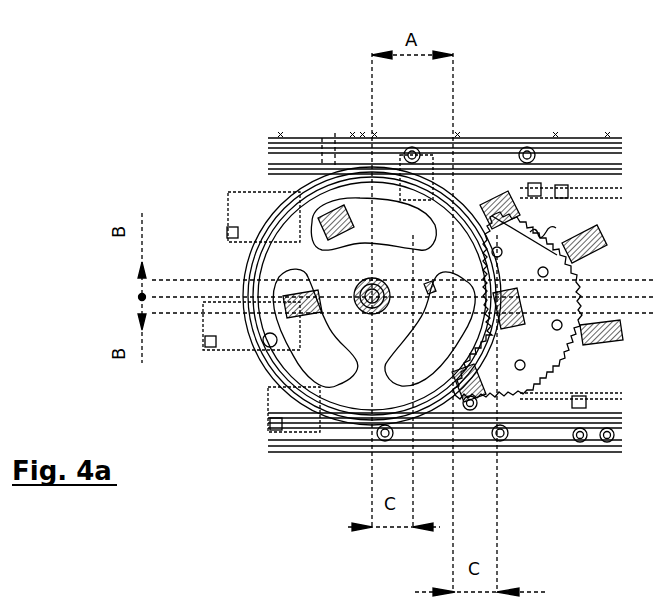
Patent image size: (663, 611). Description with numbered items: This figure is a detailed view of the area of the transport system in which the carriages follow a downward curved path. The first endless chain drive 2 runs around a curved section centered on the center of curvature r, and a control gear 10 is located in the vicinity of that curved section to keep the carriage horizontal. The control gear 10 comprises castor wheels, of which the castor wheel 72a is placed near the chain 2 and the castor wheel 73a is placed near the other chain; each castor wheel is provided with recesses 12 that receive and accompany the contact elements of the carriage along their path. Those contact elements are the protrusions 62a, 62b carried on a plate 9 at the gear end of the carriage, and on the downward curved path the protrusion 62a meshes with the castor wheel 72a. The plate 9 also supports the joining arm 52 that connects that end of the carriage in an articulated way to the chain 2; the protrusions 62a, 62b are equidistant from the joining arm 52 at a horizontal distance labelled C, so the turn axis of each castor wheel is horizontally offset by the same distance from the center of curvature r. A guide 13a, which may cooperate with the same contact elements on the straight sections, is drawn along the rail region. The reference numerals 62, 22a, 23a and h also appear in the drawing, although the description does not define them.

The first endless chain drive 2 is at (300, 190).
The control gear 10 is at (310, 238).
The recess 12 is at (438, 150).
The plate 9 is at (335, 140).
The protrusion 62a is at (415, 147).
The protrusion 62b is at (227, 233).
The guide 13a is at (570, 140).
The lower guide rail 62 is at (320, 432).
The joining arm 52 is at (540, 430).
The gear link bar 23a is at (560, 218).
The castor wheel 72a is at (445, 359).
The slot 22a is at (378, 401).
The castor wheel 73a is at (558, 355).
The center of curvature r is at (355, 285).
The hub element h is at (422, 290).